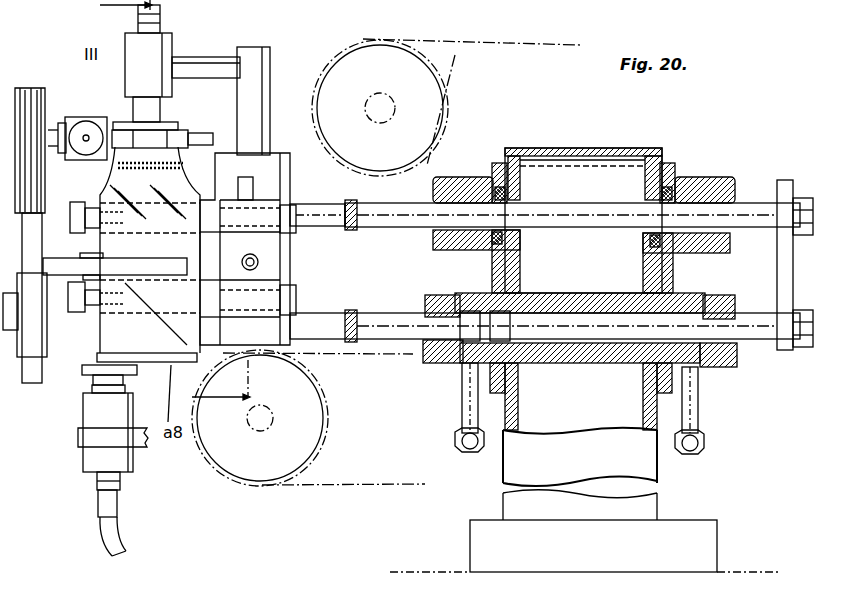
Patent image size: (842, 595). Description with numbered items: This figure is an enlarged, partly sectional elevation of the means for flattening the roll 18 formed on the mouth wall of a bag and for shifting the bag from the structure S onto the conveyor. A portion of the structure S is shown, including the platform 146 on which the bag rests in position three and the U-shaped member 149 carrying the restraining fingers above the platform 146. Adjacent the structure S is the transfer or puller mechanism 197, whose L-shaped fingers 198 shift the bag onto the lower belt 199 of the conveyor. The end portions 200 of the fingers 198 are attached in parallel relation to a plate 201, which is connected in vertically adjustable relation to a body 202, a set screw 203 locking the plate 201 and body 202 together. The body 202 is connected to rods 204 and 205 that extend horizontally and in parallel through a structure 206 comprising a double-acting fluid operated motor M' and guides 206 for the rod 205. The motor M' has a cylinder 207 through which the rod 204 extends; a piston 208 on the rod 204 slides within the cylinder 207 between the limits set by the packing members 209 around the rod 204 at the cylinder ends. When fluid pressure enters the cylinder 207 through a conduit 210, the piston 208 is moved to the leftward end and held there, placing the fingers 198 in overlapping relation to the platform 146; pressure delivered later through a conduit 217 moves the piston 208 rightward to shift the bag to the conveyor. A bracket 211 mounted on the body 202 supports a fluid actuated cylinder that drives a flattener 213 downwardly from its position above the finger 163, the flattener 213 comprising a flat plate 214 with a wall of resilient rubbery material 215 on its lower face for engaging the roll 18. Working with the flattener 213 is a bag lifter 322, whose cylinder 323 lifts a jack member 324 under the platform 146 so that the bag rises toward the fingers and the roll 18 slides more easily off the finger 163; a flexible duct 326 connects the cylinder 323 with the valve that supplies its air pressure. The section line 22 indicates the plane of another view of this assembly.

The section line 22- 22 is at (168, 210).
The roll 18 is at (134, 182).
The platform plate 146 is at (100, 353).
The U-shaped metal member 149 is at (157, 272).
The finger 163 is at (215, 139).
The transfer or puller mechanism 197 is at (622, 185).
The fingers 198 is at (55, 98).
The lower belt 199 is at (328, 357).
The end portions 200 is at (210, 217).
The plate 201 is at (258, 265).
The body 202 is at (282, 185).
The set screw 203 is at (296, 212).
The rod 204 is at (382, 323).
The rod 205 is at (392, 210).
The structure / guides 206 is at (473, 177).
The cylinder 207 is at (555, 365).
The piston 208 is at (527, 293).
The packing members 209 is at (440, 297).
The conduit 210 is at (697, 402).
The bracket 211 is at (263, 78).
The flattener 213 is at (173, 124).
The flat plate 214 is at (123, 124).
The wall of resilient rubbery material 215 is at (167, 149).
The conduit 217 is at (460, 397).
The bag lifter 322 is at (131, 457).
The cylinder 323 is at (92, 457).
The jack member 324 is at (87, 374).
The flexible duct 326 is at (122, 530).
The structure S is at (38, 388).
The double-acting fluid operated motor M' is at (595, 283).